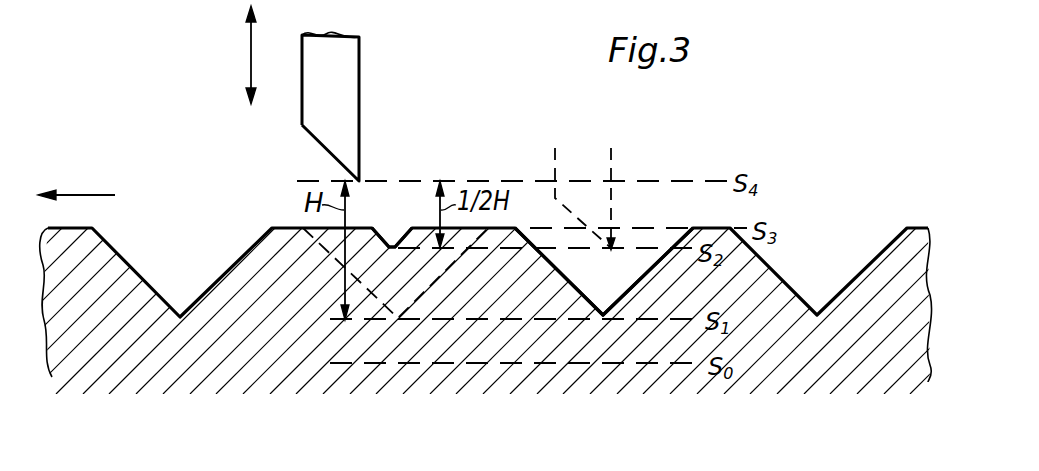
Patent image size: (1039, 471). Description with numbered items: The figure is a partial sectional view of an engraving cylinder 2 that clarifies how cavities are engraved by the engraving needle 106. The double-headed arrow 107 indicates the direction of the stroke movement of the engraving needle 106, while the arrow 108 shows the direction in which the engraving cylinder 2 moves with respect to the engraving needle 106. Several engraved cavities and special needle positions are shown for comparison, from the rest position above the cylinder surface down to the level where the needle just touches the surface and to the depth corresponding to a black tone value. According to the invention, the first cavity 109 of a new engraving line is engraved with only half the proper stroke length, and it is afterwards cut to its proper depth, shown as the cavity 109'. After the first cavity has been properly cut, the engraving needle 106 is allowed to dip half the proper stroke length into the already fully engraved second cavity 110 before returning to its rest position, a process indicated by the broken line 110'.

The engraving cylinder 2 is at (905, 303).
The engraving needle 106 is at (343, 95).
The double-headed arrow 107 is at (250, 60).
The arrow 108 is at (85, 195).
The first cavity 109 is at (389, 214).
The first cavity (proper depth) 109' is at (395, 328).
The second cavity 110 is at (604, 328).
The broken line 110' is at (616, 199).